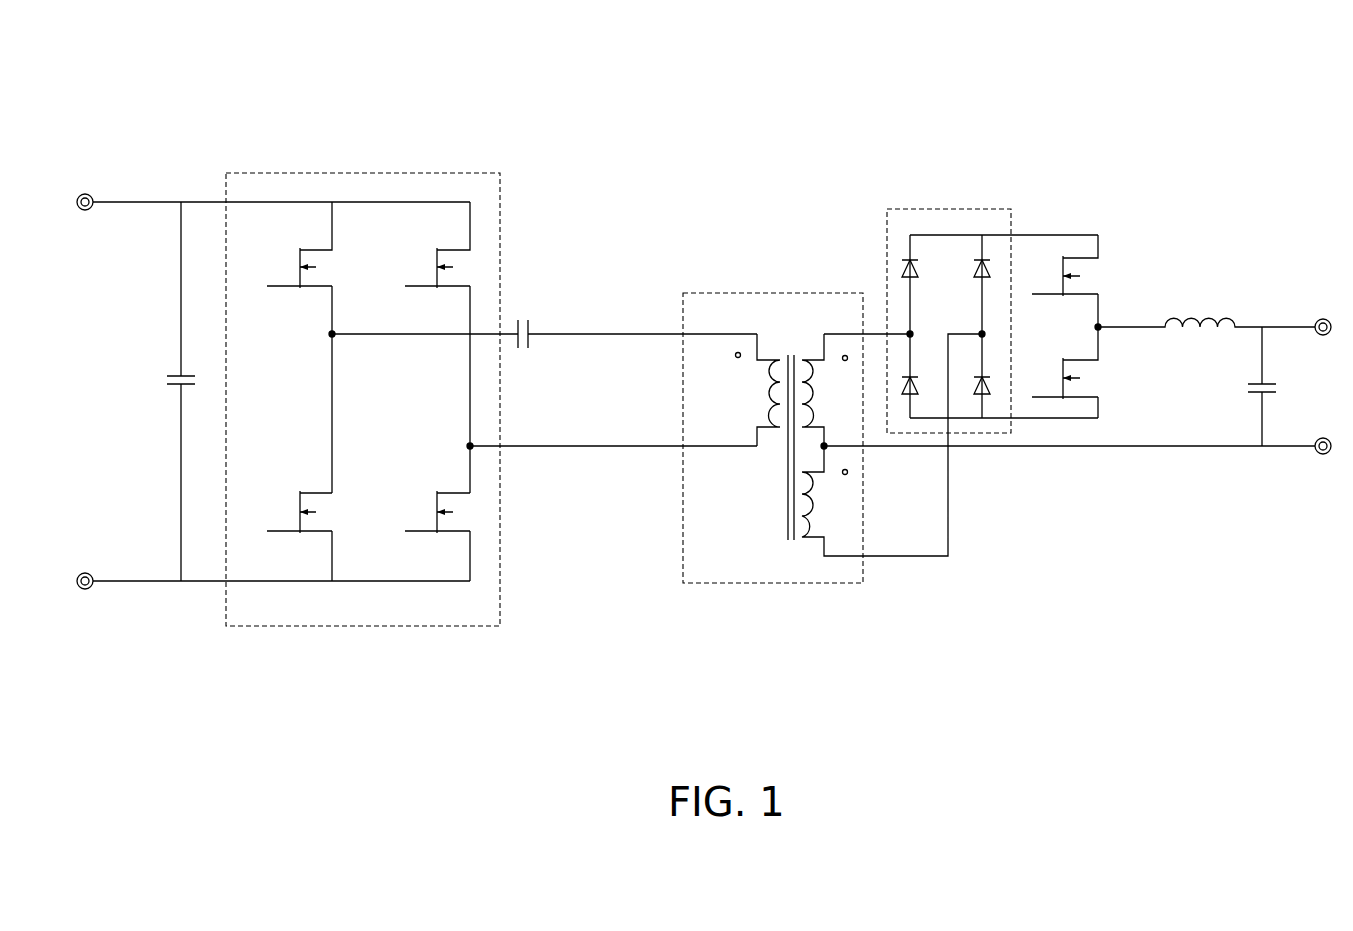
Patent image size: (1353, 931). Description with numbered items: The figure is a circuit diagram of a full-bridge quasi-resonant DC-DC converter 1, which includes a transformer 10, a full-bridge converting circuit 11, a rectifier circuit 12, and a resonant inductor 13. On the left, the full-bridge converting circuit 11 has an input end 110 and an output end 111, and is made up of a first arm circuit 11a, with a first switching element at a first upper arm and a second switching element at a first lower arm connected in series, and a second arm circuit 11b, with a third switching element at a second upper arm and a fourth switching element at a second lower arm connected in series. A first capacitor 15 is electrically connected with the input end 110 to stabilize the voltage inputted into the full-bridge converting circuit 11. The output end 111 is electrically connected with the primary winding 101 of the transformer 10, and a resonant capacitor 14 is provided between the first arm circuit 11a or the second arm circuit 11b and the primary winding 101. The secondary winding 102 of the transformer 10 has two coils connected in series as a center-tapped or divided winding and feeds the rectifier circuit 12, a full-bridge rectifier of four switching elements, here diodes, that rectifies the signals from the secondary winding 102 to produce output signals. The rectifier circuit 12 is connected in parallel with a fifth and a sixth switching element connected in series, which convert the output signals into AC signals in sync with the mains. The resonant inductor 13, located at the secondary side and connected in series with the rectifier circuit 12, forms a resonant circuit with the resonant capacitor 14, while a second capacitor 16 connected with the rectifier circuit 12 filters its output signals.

The full-bridge quasi-resonant DC-DC converter 1 is at (1168, 118).
The transformer 10 is at (832, 446).
The primary winding 101 is at (765, 442).
The secondary winding 102 is at (818, 548).
The full-bridge converting circuit 11 is at (363, 375).
The first arm circuit 11a is at (330, 389).
The second arm circuit 11b is at (468, 389).
The input end 110 is at (214, 201).
The output end 111 is at (512, 310).
The rectifier circuit 12 is at (950, 208).
The resonant inductor 13 is at (1200, 312).
The resonant capacitor 14 is at (540, 310).
The first capacitor 15 is at (176, 374).
The second capacitor 16 is at (1270, 381).